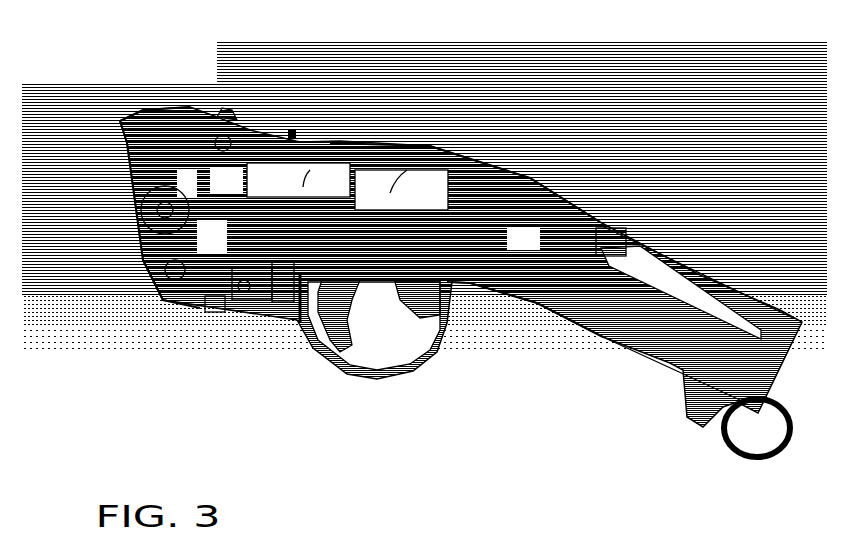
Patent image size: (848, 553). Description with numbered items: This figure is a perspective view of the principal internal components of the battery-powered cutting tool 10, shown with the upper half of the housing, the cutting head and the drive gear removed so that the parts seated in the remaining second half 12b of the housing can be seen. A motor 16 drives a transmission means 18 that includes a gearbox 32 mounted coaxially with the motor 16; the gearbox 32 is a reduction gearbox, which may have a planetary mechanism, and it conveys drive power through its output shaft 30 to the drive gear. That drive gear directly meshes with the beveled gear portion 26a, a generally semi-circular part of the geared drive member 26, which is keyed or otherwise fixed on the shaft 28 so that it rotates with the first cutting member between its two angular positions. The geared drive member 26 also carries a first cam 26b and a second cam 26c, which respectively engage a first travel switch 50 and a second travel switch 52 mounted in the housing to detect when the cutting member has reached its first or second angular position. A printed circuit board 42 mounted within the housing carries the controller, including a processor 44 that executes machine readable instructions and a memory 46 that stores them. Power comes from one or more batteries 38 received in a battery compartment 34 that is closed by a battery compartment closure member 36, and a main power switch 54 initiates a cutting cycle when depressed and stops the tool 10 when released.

The cutting tool 10 is at (575, 128).
The second half of the housing 12b is at (620, 235).
The motor 16 is at (430, 148).
The transmission means 18 is at (300, 132).
The geared drive member 26 is at (140, 233).
The beveled gear portion 26a is at (188, 307).
The first cam 26b is at (243, 120).
The second cam 26c is at (158, 302).
The shaft 28 is at (126, 186).
The output shaft 30 is at (257, 132).
The gearbox 32 is at (335, 140).
The battery compartment 34 is at (707, 268).
The battery compartment closure member 36 is at (790, 320).
The batteries 38 is at (652, 332).
The printed circuit board 42 is at (248, 318).
The processor 44 is at (311, 323).
The memory 46 is at (283, 322).
The first travel switch 50 is at (223, 106).
The second travel switch 52 is at (214, 314).
The main power switch 54 is at (472, 280).